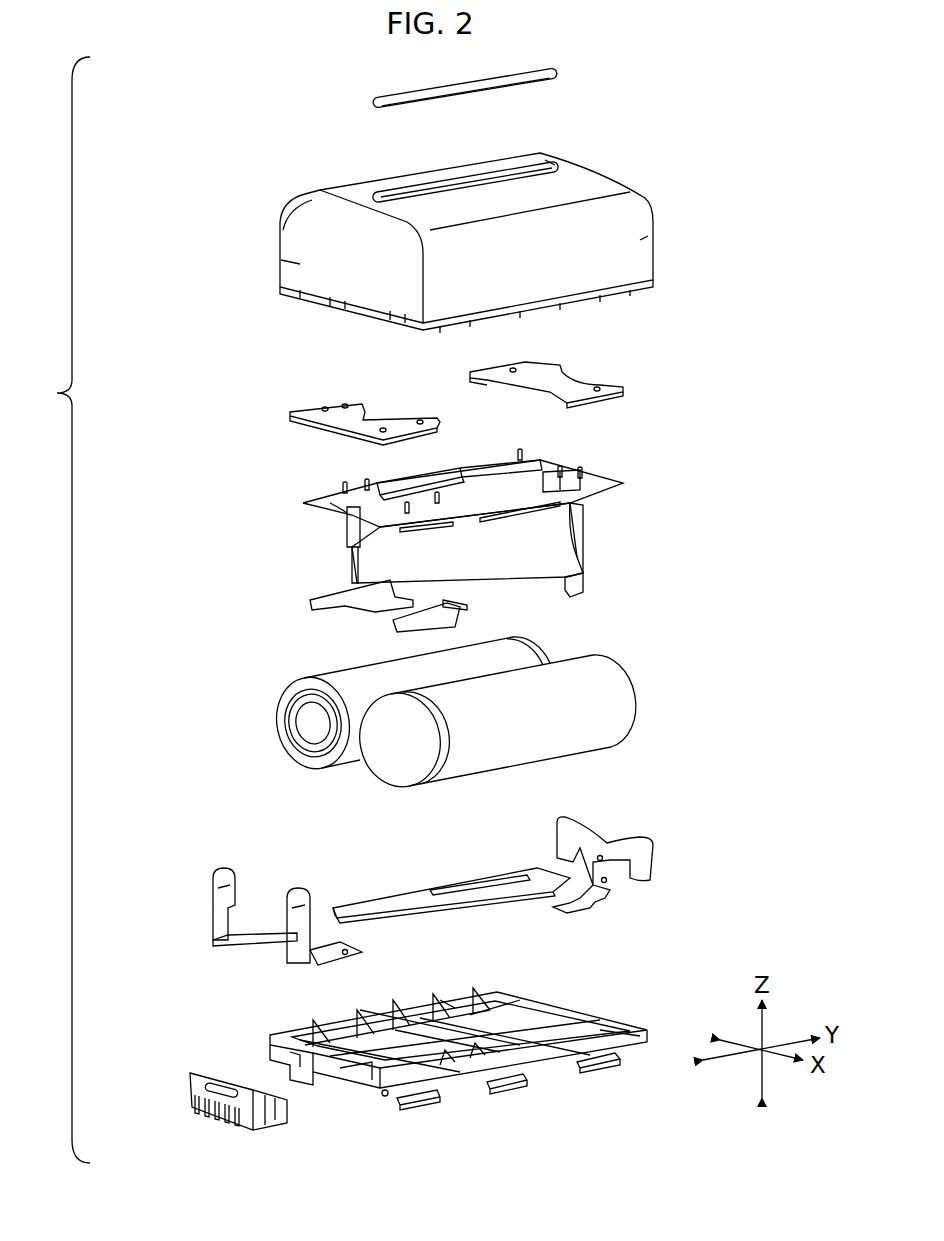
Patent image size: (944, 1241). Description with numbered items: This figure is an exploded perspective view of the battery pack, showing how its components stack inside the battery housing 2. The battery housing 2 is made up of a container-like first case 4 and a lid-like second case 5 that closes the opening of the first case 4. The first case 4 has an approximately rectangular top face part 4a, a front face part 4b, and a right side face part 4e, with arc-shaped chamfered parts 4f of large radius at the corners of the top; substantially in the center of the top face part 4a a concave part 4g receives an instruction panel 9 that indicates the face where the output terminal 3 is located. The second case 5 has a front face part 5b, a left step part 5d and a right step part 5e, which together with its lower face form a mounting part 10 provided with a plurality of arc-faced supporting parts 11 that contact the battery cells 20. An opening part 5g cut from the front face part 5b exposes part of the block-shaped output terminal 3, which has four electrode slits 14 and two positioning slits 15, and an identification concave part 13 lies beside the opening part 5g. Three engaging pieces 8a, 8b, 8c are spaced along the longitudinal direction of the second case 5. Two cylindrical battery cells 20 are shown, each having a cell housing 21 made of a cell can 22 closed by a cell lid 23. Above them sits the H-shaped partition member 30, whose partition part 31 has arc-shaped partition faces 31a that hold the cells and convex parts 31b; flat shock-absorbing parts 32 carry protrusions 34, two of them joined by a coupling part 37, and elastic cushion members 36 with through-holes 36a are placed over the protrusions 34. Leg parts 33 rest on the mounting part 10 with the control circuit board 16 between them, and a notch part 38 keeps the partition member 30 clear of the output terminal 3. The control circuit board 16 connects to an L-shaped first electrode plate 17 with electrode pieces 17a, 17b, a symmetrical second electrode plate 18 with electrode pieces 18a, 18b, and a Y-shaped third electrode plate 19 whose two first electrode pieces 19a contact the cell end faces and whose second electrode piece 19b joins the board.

The battery housing 2 is at (468, 640).
The output terminal 3 is at (199, 1109).
The first case 4 is at (468, 224).
The top face part 4a is at (420, 177).
The front face part 4b is at (307, 258).
The right side face part 4e is at (643, 231).
The chamfered part 4f is at (650, 188).
The concave part 4g is at (548, 165).
The second case 5 is at (486, 1056).
The front face part 5b is at (362, 1082).
The left step part 5d is at (447, 997).
The right step part 5e is at (648, 1033).
The opening part 5g is at (325, 1083).
The first engaging piece 8a is at (420, 1100).
The second engaging piece 8b is at (520, 1085).
The third engaging piece 8c is at (610, 1065).
The instruction panel 9 is at (525, 72).
The mounting part 10 is at (533, 1033).
The supporting part 11 is at (317, 1022).
The identification concave part 13 is at (383, 1098).
The electrode slit 14 is at (210, 1115).
The positioning slit 15 is at (195, 1102).
The control circuit board 16 is at (385, 905).
The first electrode plate 17 is at (206, 882).
The first electrode piece 17a is at (225, 873).
The second electrode piece 17b is at (250, 930).
The second electrode plate 18 is at (320, 917).
The first electrode piece 18a is at (300, 893).
The second electrode piece 18b is at (362, 952).
The third electrode plate 19 is at (650, 855).
The first electrode piece 19a is at (568, 825).
The second electrode piece 19b is at (588, 917).
The battery cell 20 is at (434, 715).
The cell housing 21 is at (258, 722).
The cell can 22 is at (300, 688).
The cell lid 23 is at (305, 725).
The partition member 30 is at (455, 536).
The partition part 31 is at (465, 503).
The partition face 31a is at (335, 523).
The convex part 31b is at (352, 533).
The shock-absorbing part 32 is at (330, 500).
The leg part 33 is at (572, 585).
The protrusion 34 is at (365, 488).
The cushion member 36 is at (468, 382).
The through-hole 36a is at (338, 408).
The coupling part 37 is at (440, 478).
The notch part 38 is at (328, 600).